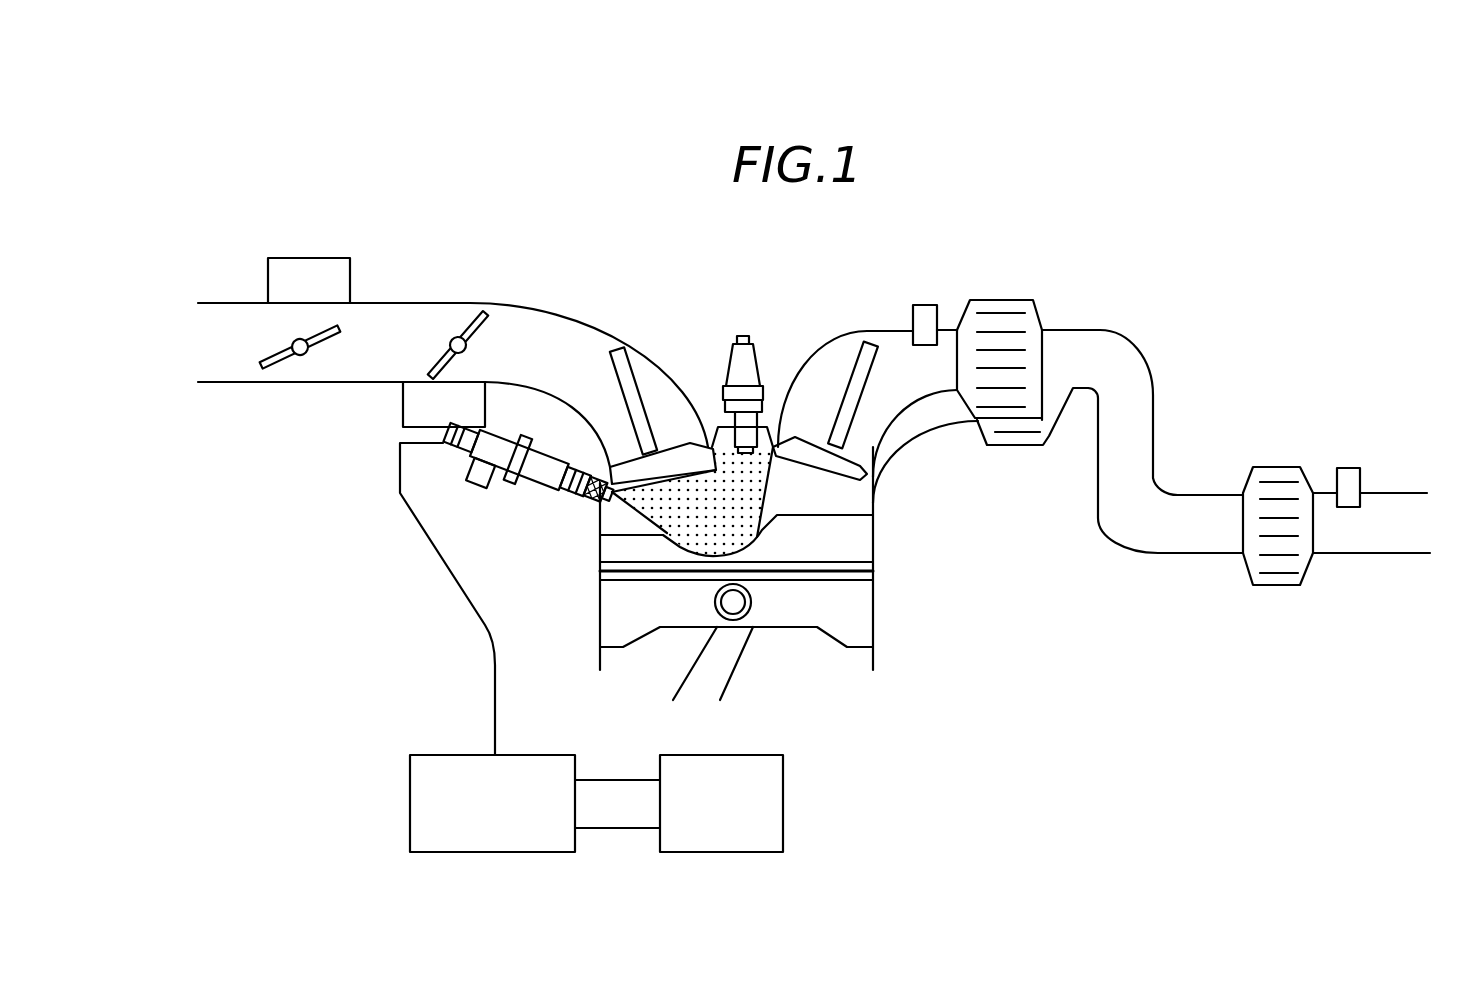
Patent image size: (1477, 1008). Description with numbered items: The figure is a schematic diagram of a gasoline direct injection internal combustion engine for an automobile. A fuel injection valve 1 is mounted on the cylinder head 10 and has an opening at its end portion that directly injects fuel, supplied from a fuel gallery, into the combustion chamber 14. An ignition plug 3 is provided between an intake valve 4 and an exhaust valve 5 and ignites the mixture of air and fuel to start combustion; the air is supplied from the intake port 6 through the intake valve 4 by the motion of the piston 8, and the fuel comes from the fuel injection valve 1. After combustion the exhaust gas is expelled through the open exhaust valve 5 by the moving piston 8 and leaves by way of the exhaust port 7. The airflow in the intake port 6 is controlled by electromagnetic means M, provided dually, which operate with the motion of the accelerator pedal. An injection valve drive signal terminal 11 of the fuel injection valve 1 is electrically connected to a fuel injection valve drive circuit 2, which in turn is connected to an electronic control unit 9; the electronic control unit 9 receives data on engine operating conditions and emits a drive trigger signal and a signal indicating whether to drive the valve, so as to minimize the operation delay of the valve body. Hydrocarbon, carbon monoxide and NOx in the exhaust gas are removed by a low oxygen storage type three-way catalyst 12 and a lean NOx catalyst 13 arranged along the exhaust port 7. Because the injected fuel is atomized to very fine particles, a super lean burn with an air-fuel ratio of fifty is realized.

The fuel injection valve 1 is at (527, 482).
The fuel injection valve drive circuit 2 is at (410, 805).
The ignition plug 3 is at (744, 356).
The intake valve 4 is at (633, 380).
The exhaust valve 5 is at (853, 365).
The intake port 6 is at (210, 351).
The exhaust port 7 is at (1405, 528).
The piston 8 is at (874, 570).
The electronic control unit 9 is at (783, 805).
The cylinder head 10 is at (712, 447).
The injection valve drive signal terminal 11 is at (398, 455).
The three-way catalyst 12 is at (995, 300).
The NOx catalyst 13 is at (1277, 467).
The combustion chamber 14 is at (820, 495).